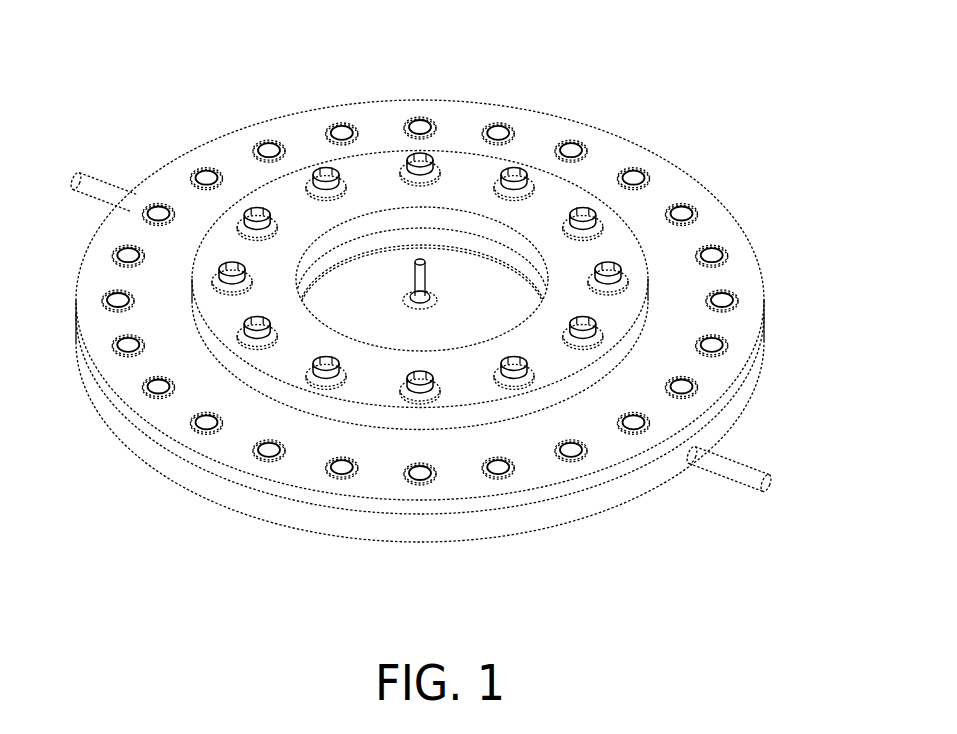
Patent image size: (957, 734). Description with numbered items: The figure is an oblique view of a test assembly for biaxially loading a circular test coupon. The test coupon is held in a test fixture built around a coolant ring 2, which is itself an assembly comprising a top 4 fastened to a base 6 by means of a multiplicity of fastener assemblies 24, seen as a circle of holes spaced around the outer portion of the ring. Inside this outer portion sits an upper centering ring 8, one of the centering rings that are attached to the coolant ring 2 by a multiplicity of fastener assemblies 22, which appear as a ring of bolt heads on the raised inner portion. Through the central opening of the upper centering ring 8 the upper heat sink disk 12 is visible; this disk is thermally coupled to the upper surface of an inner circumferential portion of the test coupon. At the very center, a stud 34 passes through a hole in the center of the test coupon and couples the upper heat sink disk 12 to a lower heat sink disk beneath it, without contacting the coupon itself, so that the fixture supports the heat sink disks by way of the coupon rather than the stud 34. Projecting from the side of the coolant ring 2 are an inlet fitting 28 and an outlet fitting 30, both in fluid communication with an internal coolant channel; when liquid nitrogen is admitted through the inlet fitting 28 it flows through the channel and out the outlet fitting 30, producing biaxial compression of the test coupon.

The coolant ring 2 is at (460, 312).
The top 4 is at (733, 277).
The base 6 is at (735, 400).
The upper centering ring 8 is at (602, 240).
The upper heat sink disk 12 is at (443, 320).
The fastener assemblies 22 is at (427, 153).
The fastener assemblies 24 is at (270, 140).
The inlet fitting 28 is at (87, 180).
The outlet fitting 30 is at (735, 474).
The stud 34 is at (421, 280).